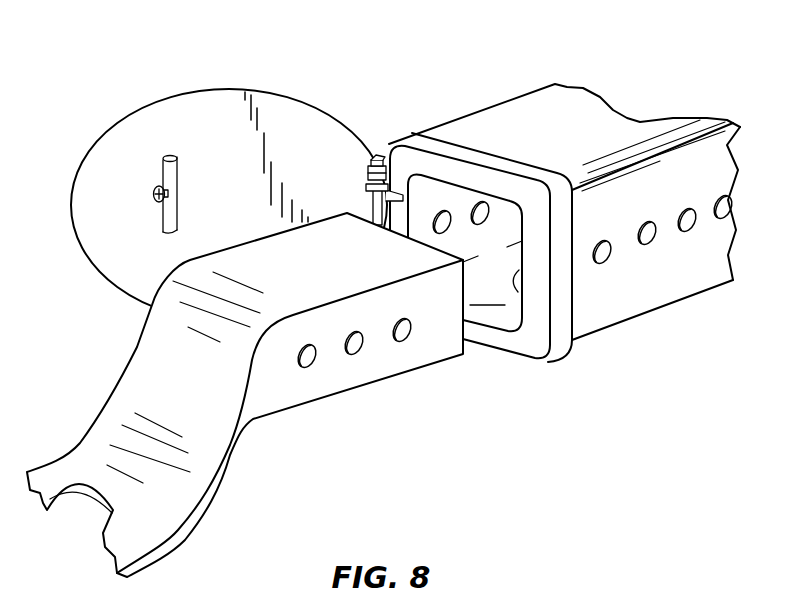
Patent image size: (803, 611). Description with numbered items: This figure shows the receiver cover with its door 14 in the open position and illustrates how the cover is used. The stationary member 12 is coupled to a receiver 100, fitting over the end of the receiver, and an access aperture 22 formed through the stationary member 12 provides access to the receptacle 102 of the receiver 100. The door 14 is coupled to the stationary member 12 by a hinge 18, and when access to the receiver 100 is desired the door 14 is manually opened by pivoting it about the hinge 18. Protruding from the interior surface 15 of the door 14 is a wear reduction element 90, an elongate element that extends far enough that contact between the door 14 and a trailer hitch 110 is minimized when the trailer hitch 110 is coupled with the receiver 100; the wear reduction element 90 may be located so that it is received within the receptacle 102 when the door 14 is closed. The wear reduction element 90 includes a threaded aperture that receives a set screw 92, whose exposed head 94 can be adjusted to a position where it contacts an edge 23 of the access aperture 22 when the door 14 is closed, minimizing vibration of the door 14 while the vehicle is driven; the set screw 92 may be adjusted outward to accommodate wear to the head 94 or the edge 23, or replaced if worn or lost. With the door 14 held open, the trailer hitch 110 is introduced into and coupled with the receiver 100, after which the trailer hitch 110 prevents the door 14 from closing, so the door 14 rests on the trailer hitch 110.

The stationary member 12 is at (522, 347).
The door 14 is at (138, 137).
The interior surface 15 is at (197, 112).
The hinge 18 is at (380, 137).
The access aperture 22 is at (480, 266).
The edge 23 is at (523, 293).
The wear reduction element 90 is at (170, 176).
The set screw 92 is at (153, 212).
The exposed head 94 is at (155, 193).
The receiver 100 is at (610, 130).
The receptacle 102 is at (495, 303).
The trailer hitch 110 is at (287, 382).